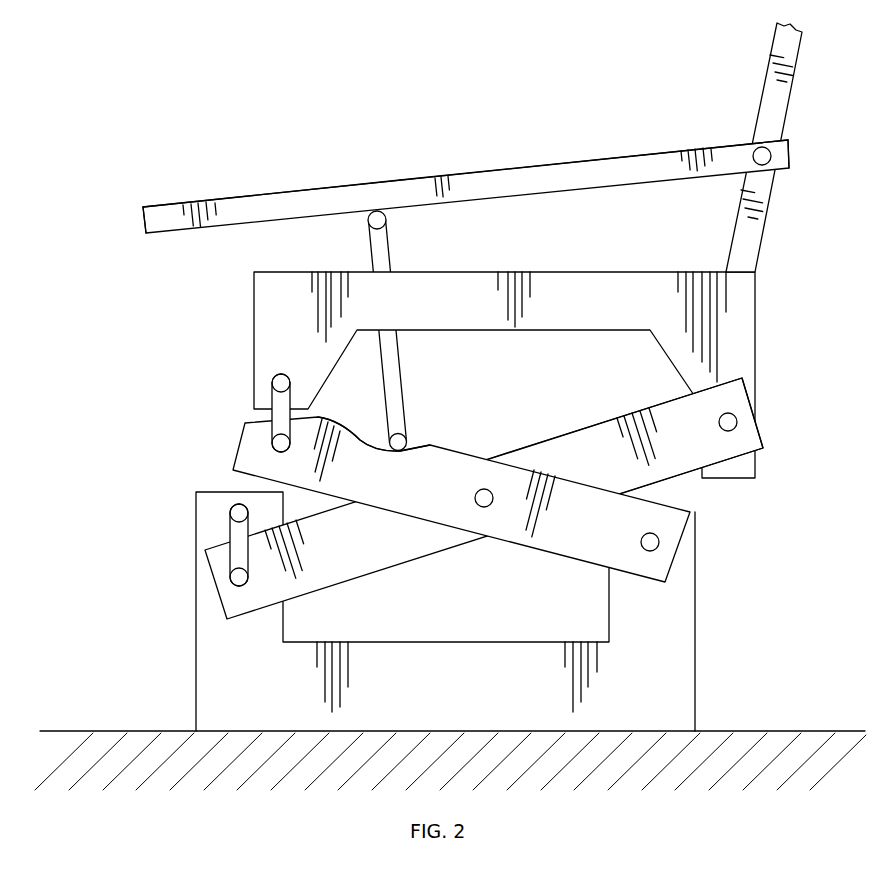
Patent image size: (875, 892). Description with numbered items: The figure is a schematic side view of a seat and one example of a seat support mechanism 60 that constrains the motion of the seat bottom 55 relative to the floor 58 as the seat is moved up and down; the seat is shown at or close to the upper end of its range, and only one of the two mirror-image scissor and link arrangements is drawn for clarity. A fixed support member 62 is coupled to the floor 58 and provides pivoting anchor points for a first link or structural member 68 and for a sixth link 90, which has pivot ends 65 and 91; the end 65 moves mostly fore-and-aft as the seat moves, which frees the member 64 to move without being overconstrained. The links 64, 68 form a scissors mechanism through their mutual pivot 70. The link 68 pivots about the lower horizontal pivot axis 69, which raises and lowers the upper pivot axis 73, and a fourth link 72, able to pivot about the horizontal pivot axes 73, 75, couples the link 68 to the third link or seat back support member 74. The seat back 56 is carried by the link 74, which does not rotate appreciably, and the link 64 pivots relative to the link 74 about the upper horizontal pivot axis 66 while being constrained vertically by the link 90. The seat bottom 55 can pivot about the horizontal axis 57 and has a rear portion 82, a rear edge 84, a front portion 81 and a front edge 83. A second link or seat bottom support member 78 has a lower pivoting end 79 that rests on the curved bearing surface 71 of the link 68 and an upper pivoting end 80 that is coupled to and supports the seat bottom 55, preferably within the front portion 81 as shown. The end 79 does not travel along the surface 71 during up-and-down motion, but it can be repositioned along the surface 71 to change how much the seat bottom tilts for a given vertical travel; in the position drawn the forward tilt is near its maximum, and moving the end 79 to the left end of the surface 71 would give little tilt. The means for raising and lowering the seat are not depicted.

The seat bottom 55 is at (428, 177).
The seat back 56 is at (780, 106).
The horizontal axis 57 is at (772, 153).
The floor 58 is at (784, 730).
The seat support mechanism 60 is at (445, 377).
The fixed support member 62 is at (208, 672).
The link 64 is at (350, 565).
The pivot end 65 is at (237, 578).
The upper horizontal pivot axis 66 is at (737, 420).
The first link 68 is at (562, 543).
The lower horizontal pivot axis 69 is at (658, 543).
The mutual pivot 70 is at (483, 490).
The curved bearing surface 71 is at (333, 433).
The fourth link 72 is at (281, 416).
The upper horizontal pivot axis 73 is at (280, 446).
The third link 74 is at (268, 308).
The horizontal pivot axis 75 is at (277, 384).
The second link 78 is at (393, 358).
The lower pivoting end 79 is at (406, 440).
The upper pivoting end 80 is at (387, 220).
The front portion 81 is at (269, 188).
The rear portion 82 is at (614, 151).
The front edge 83 is at (143, 219).
The rear edge 84 is at (790, 162).
The sixth link 90 is at (238, 536).
The pivot end 91 is at (239, 505).